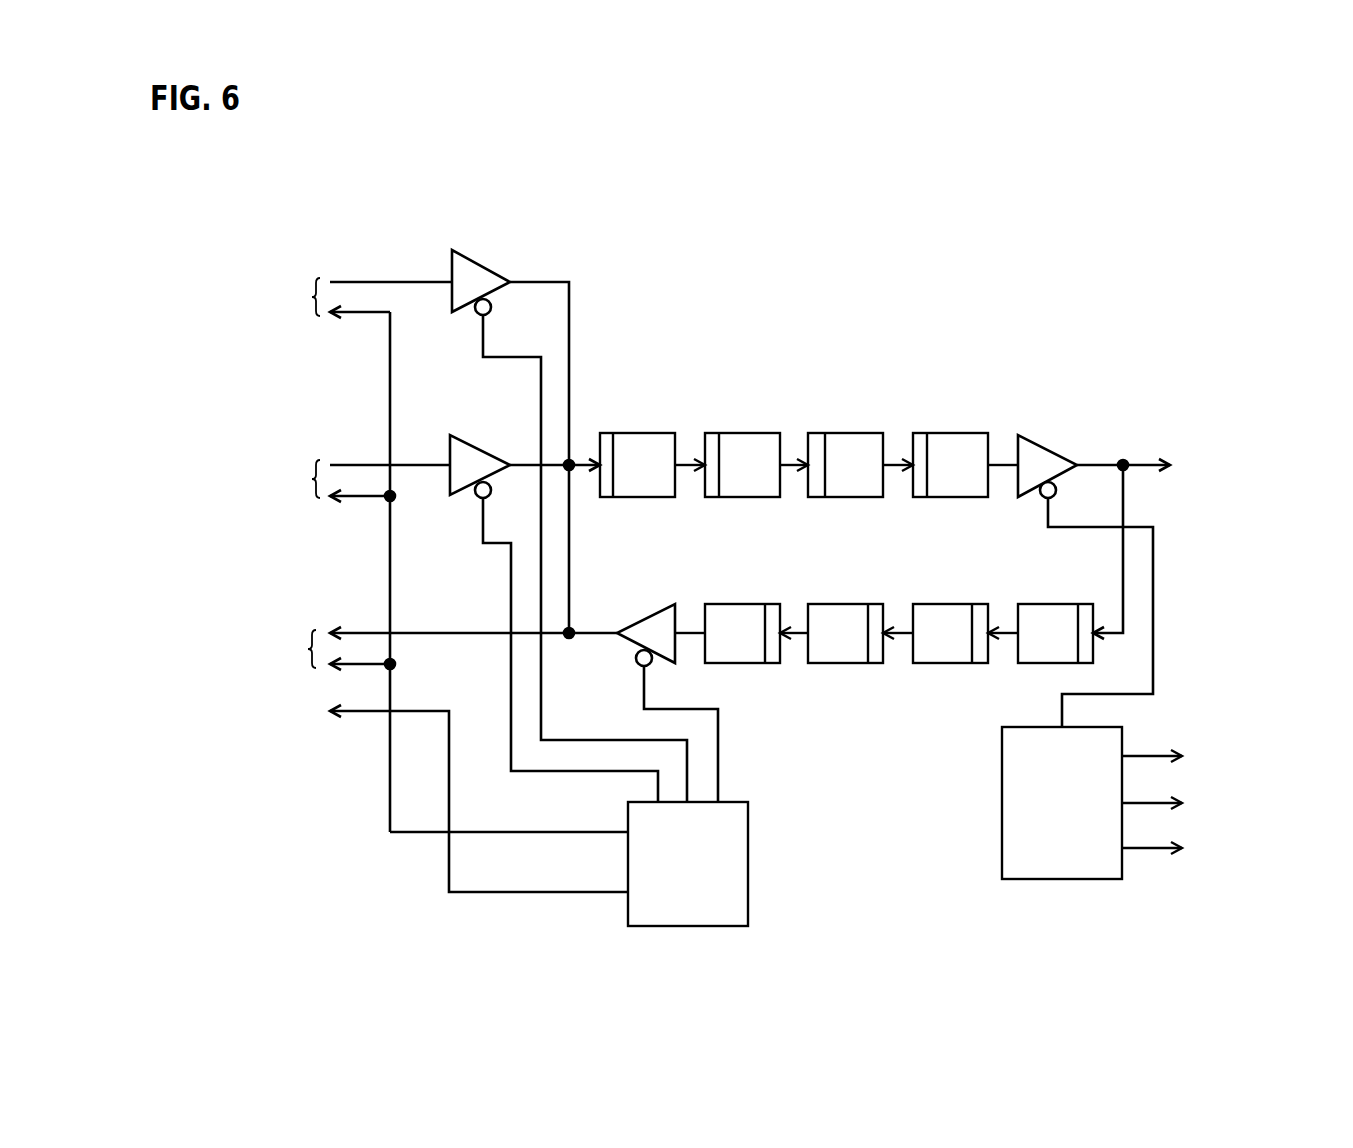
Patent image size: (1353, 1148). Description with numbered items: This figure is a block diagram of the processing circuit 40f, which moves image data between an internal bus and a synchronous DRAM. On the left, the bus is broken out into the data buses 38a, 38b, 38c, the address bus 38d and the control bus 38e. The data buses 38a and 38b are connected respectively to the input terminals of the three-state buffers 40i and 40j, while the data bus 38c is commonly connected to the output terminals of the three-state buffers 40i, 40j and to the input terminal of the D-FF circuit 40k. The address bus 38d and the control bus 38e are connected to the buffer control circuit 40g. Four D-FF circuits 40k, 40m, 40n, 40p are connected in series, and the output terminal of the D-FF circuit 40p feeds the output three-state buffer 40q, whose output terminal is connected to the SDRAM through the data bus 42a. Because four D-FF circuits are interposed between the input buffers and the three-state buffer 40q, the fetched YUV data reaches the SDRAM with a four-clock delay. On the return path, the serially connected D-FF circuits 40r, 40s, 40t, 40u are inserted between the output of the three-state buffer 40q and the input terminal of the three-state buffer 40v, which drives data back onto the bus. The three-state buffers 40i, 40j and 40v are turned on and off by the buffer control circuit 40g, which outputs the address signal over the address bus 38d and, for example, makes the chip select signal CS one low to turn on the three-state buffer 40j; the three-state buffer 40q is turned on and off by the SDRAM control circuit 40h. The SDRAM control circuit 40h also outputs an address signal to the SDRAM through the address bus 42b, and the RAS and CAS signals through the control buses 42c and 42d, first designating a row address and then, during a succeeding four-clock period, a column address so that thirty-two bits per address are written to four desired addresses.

The processing circuit 40f is at (306, 206).
The data bus 38a is at (352, 282).
The data bus 38b is at (370, 462).
The data bus 38c is at (370, 633).
The address bus 38d is at (392, 612).
The control bus 38e is at (430, 711).
The 3-state buffer 40i is at (488, 266).
The 3-state buffer 40j is at (450, 448).
The D-FF circuit 40k is at (655, 433).
The D-FF circuit 40m is at (760, 433).
The D-FF circuit 40n is at (865, 433).
The D-FF circuit 40p is at (970, 433).
The 3-state buffer 40q is at (1050, 447).
The D-FF circuit 40r is at (1065, 603).
The D-FF circuit 40s is at (967, 603).
The D-FF circuit 40t is at (859, 603).
The D-FF circuit 40u is at (755, 603).
The 3-state buffer 40v is at (659, 608).
The buffer control circuit 40g is at (748, 820).
The SDRAM control circuit 40h is at (1002, 787).
The data bus 42a is at (1140, 463).
The address bus 42b is at (1148, 756).
The control bus 42c is at (1143, 803).
The control bus 42d is at (1140, 849).